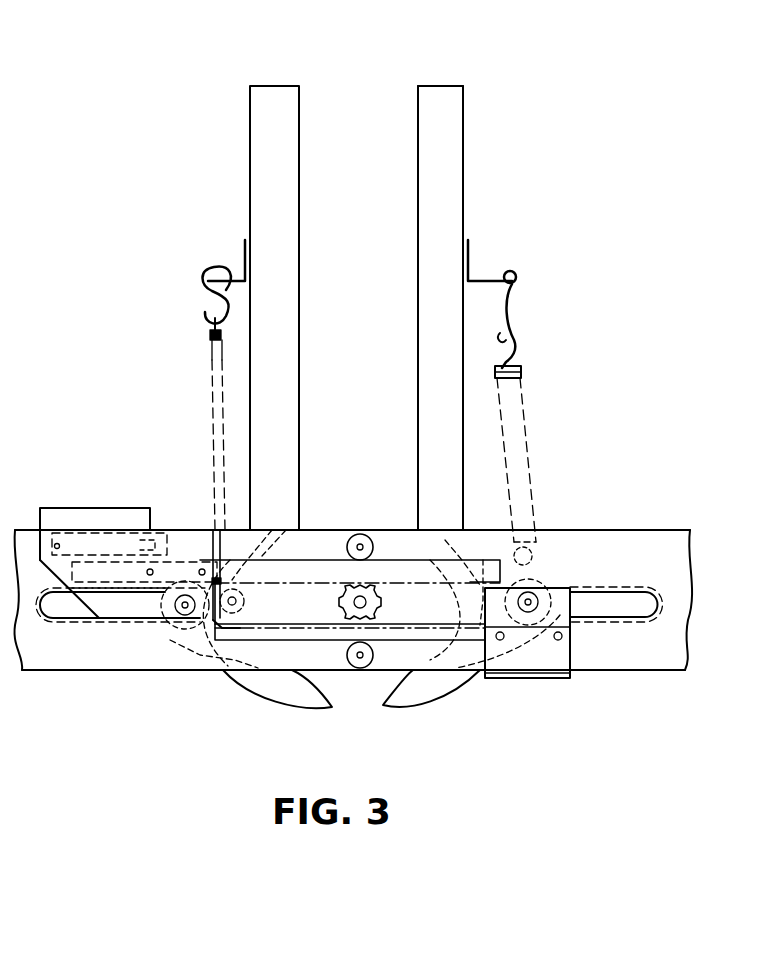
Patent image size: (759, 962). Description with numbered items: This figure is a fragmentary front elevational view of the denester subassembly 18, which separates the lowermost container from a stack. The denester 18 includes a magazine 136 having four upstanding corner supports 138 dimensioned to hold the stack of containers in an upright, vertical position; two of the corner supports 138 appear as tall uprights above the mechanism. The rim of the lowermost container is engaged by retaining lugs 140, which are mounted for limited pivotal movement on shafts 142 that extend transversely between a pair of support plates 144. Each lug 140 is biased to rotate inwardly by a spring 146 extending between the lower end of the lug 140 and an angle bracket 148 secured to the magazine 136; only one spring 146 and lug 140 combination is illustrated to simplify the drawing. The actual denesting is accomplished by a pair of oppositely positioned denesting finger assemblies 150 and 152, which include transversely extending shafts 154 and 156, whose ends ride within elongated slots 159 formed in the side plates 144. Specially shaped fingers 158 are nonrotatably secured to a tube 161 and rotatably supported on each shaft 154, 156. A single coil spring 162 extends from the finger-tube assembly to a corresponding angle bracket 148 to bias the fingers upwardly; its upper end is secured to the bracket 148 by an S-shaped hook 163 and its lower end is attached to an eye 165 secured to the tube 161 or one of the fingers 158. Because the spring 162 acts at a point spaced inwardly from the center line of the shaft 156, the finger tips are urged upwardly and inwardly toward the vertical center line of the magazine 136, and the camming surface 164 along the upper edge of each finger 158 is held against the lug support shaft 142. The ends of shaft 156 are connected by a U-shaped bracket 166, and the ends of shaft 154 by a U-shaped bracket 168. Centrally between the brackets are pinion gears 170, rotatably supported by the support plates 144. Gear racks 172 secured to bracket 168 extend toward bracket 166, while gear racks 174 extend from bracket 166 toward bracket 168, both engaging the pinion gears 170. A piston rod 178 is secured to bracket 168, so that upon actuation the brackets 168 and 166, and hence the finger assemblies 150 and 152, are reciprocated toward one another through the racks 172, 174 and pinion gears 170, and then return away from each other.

The denester subassembly 18 is at (160, 316).
The magazine 136 is at (490, 168).
The corner supports 138 is at (265, 135).
The retaining lugs 140 is at (262, 541).
The shafts 142 is at (248, 608).
The support plates 144 is at (645, 540).
The springs 146 is at (212, 365).
The angle bracket 148 is at (236, 278).
The denesting finger assembly 150 is at (148, 632).
The denesting finger assembly 152 is at (585, 684).
The shaft 154 is at (185, 616).
The shaft 156 is at (535, 594).
The fingers 158 is at (285, 700).
The elongated slots 159 is at (66, 610).
The tube 161 is at (646, 606).
The coil spring 162 is at (515, 388).
The S-shaped hook 163 is at (514, 310).
The camming surface 164 is at (396, 690).
The eye 165 is at (204, 521).
The U-shaped bracket 166 is at (528, 679).
The U-shaped bracket 168 is at (118, 515).
The pinion gears 170 is at (395, 592).
The gear racks 172 is at (325, 570).
The gear racks 174 is at (350, 611).
The piston rod 178 is at (72, 545).